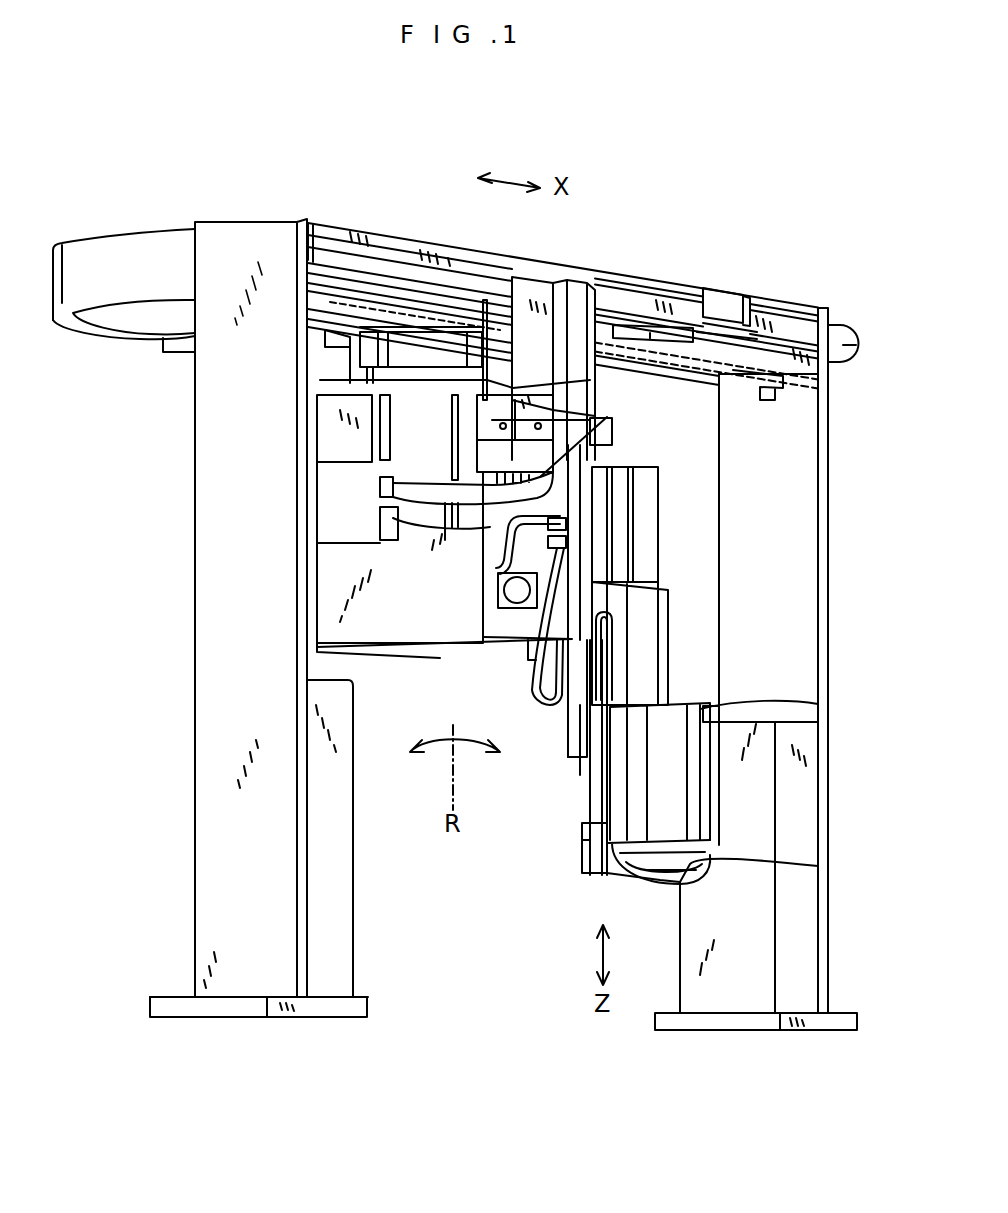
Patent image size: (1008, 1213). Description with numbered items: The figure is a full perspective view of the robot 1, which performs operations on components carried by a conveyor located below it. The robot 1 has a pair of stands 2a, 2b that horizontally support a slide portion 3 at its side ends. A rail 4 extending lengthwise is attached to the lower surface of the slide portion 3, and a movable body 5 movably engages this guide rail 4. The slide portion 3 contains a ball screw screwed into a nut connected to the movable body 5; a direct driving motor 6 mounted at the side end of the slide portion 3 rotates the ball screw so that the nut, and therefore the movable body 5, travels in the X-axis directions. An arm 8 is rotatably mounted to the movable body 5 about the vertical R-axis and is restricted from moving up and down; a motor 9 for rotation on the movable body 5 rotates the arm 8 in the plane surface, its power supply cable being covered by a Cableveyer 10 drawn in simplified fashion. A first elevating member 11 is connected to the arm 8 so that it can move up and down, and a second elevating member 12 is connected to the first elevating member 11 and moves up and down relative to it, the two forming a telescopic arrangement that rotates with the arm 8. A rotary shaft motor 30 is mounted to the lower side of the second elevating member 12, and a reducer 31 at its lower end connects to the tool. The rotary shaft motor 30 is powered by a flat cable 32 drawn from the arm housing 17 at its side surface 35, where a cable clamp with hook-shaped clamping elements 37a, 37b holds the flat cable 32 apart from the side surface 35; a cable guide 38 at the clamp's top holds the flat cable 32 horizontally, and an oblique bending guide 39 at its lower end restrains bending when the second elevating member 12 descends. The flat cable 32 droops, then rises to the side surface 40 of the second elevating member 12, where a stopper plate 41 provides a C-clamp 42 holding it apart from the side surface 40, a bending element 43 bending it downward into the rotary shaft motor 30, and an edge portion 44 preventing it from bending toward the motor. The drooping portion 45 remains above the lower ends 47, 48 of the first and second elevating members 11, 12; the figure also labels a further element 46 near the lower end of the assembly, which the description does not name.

The robot 1 is at (752, 188).
The stand 2a is at (213, 856).
The stand 2b is at (822, 776).
The slide portion 3 is at (525, 262).
The rail 4 is at (345, 300).
The movable body 5 is at (393, 485).
The direct driving motor 6 is at (838, 332).
The arm 8 is at (414, 640).
The motor for rotation 9 is at (588, 280).
The Cableveyer 10 is at (74, 270).
The first elevating member 11 is at (640, 490).
The second elevating member 12 is at (665, 656).
The arm housing 17 is at (325, 588).
The rotary shaft motor 30 is at (700, 715).
The reducer 31 is at (700, 847).
The flat cable 32 is at (556, 660).
The side surface 35 is at (490, 527).
The clamping element 37a is at (570, 523).
The clamping element 37b is at (560, 541).
The cable guide 38 is at (600, 428).
The bending guide 39 is at (512, 612).
The side surface 40 is at (590, 880).
The stopper plate 41 is at (600, 835).
The C-clamp 42 is at (570, 720).
The bending element 43 is at (607, 617).
The edge portion 44 is at (590, 808).
The drooping portion 45 is at (582, 785).
The nozzle holder 46 is at (610, 878).
The lower end 47 is at (568, 768).
The lower end 48 is at (553, 690).